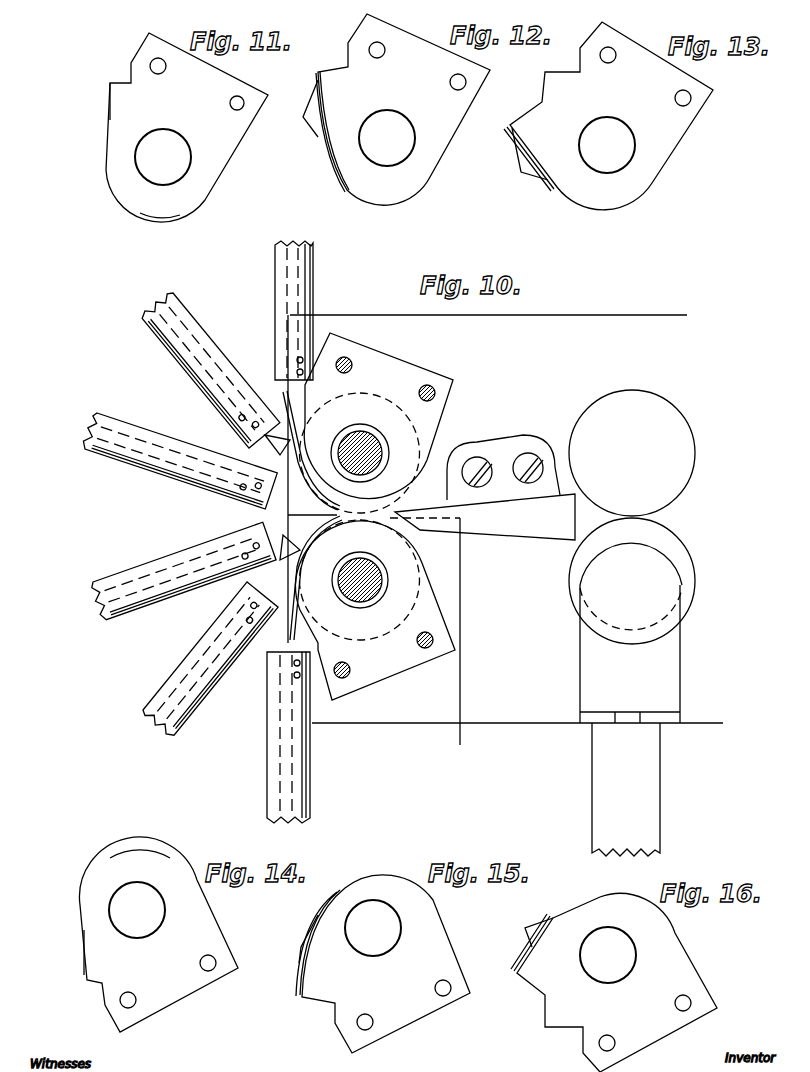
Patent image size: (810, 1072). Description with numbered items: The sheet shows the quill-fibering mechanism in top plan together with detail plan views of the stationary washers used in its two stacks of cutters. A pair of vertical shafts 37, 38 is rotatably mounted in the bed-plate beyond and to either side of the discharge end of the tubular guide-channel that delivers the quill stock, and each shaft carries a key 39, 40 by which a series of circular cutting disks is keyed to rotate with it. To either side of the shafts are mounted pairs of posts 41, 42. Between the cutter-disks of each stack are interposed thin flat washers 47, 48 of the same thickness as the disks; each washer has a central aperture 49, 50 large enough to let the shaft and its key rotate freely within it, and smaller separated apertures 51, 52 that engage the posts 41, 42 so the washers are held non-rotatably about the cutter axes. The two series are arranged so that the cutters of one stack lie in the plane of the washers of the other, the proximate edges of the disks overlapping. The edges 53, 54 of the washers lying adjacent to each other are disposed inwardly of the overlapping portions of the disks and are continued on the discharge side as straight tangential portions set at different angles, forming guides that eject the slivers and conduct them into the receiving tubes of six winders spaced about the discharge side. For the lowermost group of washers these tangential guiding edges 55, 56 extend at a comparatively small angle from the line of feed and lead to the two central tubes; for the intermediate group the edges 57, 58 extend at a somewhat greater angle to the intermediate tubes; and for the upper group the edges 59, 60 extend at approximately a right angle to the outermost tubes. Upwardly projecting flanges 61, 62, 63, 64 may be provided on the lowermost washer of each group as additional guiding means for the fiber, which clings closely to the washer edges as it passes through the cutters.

In FIG. 10, the vertical shaft 37 is at (380, 447).
In FIG. 10, the vertical shaft 38 is at (375, 575).
In FIG. 10, the key 39 is at (360, 440).
In FIG. 10, the key 40 is at (357, 607).
In FIG. 10, the posts 41 is at (425, 386).
In FIG. 10, the posts 42 is at (423, 650).
In FIG. 11, the washer 47 is at (187, 127).
In FIG. 12, the washer 47 is at (404, 109).
In FIG. 13, the washer 47 is at (611, 116).
In FIG. 14, the washer 48 is at (158, 934).
In FIG. 15, the washer 48 is at (386, 964).
In FIG. 16, the washer 48 is at (617, 982).
In FIG. 11, the aperture 49 is at (163, 157).
In FIG. 12, the aperture 49 is at (387, 138).
In FIG. 13, the aperture 49 is at (607, 145).
In FIG. 14, the aperture 50 is at (137, 910).
In FIG. 15, the aperture 50 is at (373, 928).
In FIG. 16, the aperture 50 is at (608, 955).
In FIG. 11, the separated apertures 51 is at (229, 103).
In FIG. 14, the separated apertures 52 is at (192, 978).
In FIG. 11, the edge 53 is at (157, 214).
In FIG. 14, the edge 54 is at (137, 846).
In FIG. 13, the tangential guiding edge 55 is at (531, 178).
In FIG. 16, the tangential guiding edge 56 is at (553, 917).
In FIG. 12, the tangential guiding edge 57 is at (313, 136).
In FIG. 15, the tangential guiding edge 58 is at (305, 930).
In FIG. 11, the tangential guiding edge 59 is at (108, 118).
In FIG. 14, the tangential guiding edge 60 is at (85, 948).
In FIG. 13, the upwardly projecting flange 61 is at (522, 140).
In FIG. 10, the upwardly projecting flange 61 is at (258, 477).
In FIG. 10, the upwardly projecting flange 62 is at (258, 547).
In FIG. 16, the upwardly projecting flange 62 is at (528, 952).
In FIG. 12, the upwardly projecting flange 63 is at (316, 86).
In FIG. 10, the upwardly projecting flange 63 is at (243, 436).
In FIG. 10, the upwardly projecting flange 64 is at (258, 612).
In FIG. 15, the upwardly projecting flange 64 is at (298, 963).